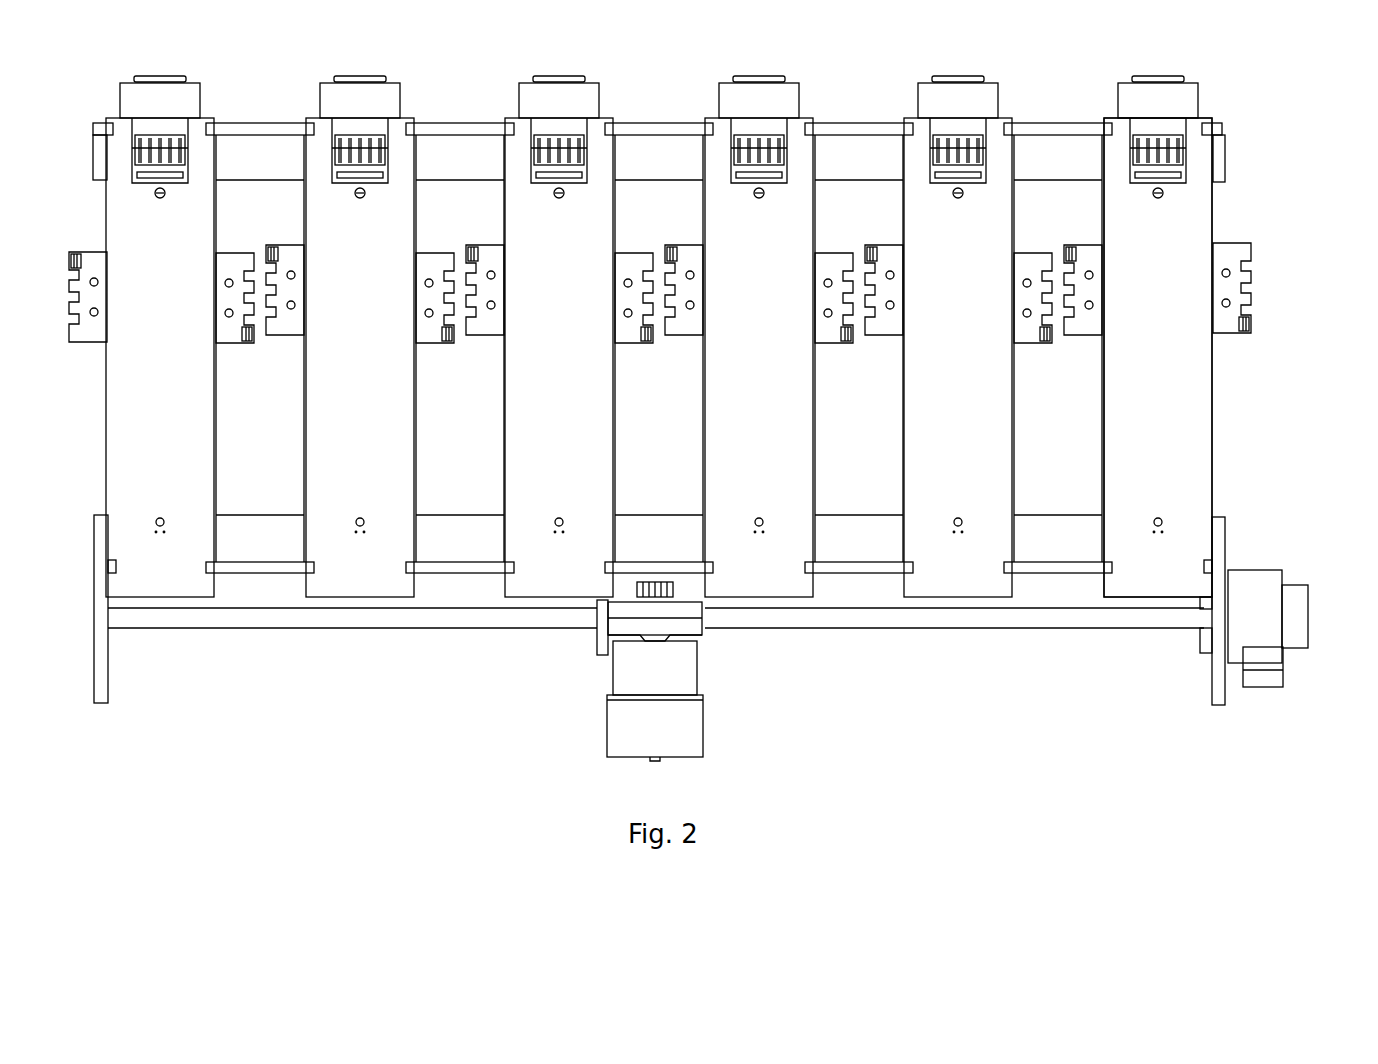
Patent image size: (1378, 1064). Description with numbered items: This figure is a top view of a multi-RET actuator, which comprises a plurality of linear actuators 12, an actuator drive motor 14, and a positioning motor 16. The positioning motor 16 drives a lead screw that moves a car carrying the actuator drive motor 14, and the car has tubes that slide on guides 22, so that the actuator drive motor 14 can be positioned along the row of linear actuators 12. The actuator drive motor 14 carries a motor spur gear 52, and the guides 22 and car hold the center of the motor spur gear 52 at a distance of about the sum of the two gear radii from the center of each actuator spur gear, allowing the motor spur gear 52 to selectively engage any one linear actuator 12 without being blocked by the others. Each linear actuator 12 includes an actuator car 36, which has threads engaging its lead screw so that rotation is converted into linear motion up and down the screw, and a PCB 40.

The linear actuator 12 is at (157, 76).
The actuator drive motor 14 is at (693, 712).
The positioning motor 16 is at (1292, 623).
The guide 22 is at (165, 617).
The actuator car 36 is at (1243, 243).
The PCB 40 is at (1187, 465).
The motor spur gear 52 is at (675, 585).